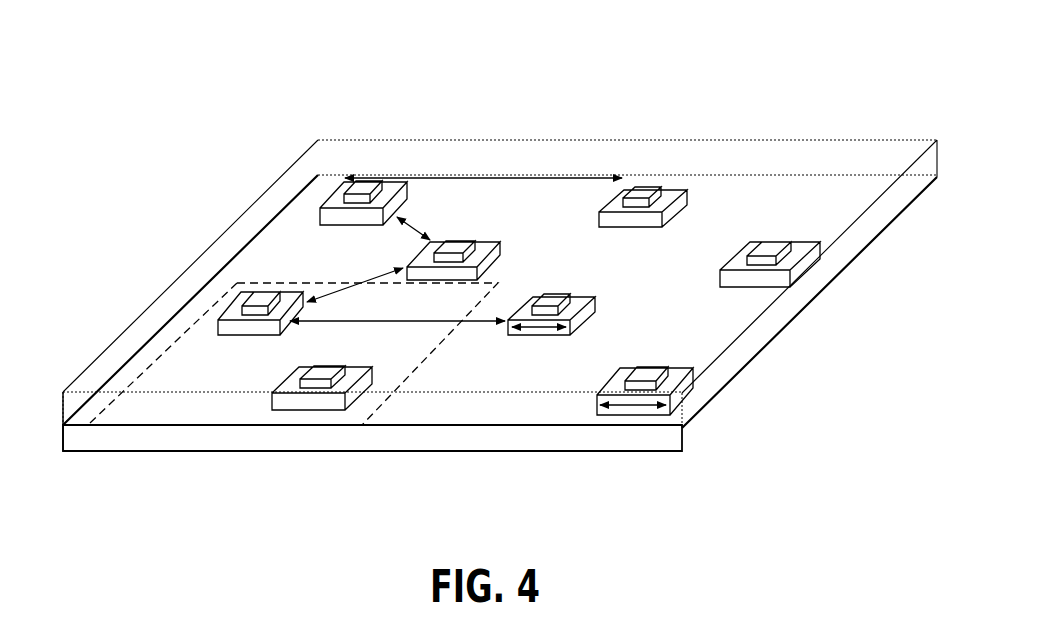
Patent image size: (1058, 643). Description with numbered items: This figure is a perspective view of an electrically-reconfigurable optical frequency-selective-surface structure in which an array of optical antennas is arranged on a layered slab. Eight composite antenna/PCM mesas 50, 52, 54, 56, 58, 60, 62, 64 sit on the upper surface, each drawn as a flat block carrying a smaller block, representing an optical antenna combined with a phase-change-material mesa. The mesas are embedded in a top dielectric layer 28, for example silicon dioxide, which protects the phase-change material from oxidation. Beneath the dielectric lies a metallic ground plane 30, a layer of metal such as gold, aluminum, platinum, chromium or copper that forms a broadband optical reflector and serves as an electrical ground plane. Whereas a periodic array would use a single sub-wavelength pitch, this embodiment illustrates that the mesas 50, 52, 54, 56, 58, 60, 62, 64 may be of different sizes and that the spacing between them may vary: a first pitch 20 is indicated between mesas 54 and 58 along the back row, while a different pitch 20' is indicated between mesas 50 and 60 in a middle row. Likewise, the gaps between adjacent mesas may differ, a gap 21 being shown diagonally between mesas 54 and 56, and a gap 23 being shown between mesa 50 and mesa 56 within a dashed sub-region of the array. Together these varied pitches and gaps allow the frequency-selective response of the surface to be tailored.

The pitch 20 is at (488, 127).
The pitch 20' is at (397, 343).
The gap 21 is at (410, 228).
The gap 23 is at (307, 298).
The dielectric layer 28 is at (348, 145).
The metallic ground plane layer 30 is at (668, 443).
The composite antenna/PCM mesa 50 is at (218, 328).
The composite antenna/PCM mesa 52 is at (273, 400).
The composite antenna/PCM mesa 54 is at (380, 188).
The composite antenna/PCM mesa 56 is at (500, 256).
The composite antenna/PCM mesa 58 is at (682, 188).
The composite antenna/PCM mesa 60 is at (587, 313).
The composite antenna/PCM mesa 62 is at (810, 245).
The composite antenna/PCM mesa 64 is at (670, 390).